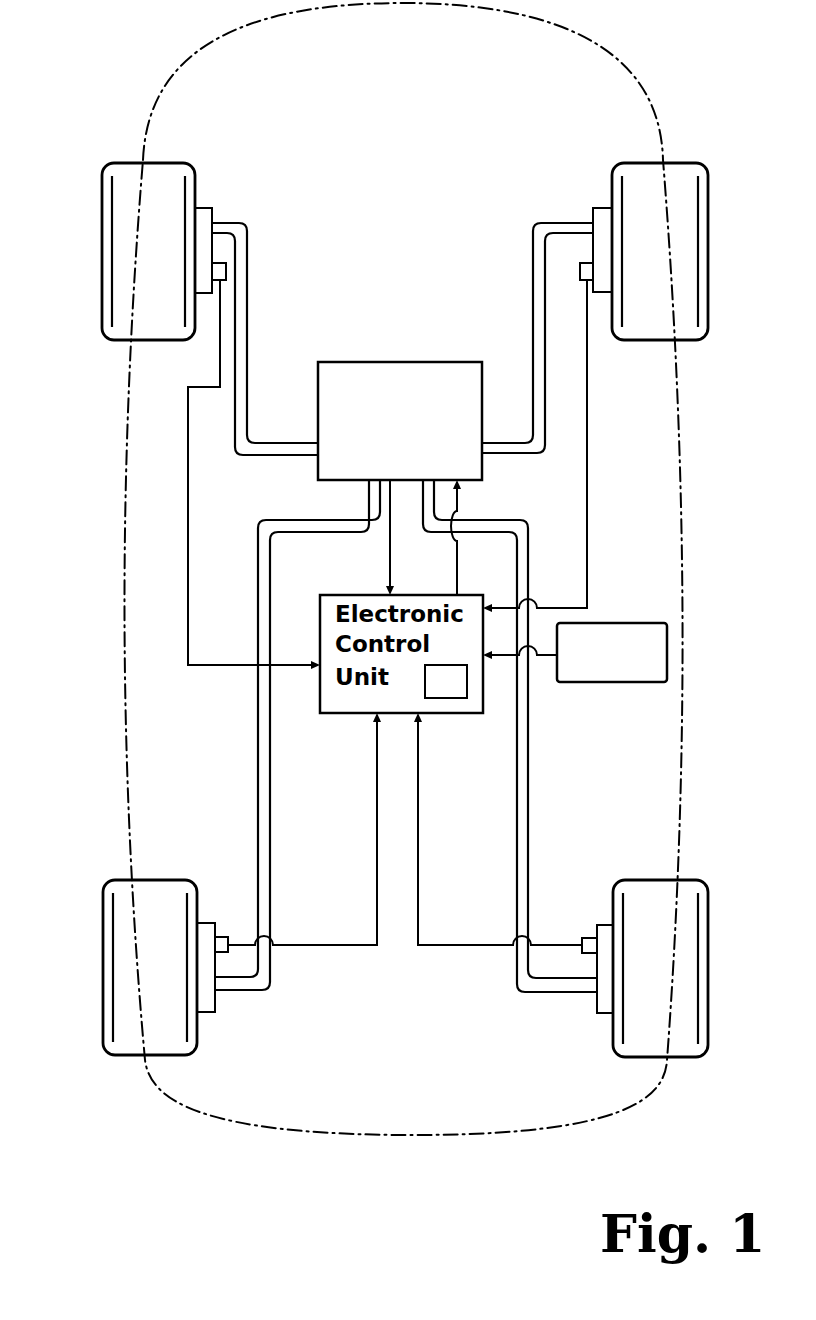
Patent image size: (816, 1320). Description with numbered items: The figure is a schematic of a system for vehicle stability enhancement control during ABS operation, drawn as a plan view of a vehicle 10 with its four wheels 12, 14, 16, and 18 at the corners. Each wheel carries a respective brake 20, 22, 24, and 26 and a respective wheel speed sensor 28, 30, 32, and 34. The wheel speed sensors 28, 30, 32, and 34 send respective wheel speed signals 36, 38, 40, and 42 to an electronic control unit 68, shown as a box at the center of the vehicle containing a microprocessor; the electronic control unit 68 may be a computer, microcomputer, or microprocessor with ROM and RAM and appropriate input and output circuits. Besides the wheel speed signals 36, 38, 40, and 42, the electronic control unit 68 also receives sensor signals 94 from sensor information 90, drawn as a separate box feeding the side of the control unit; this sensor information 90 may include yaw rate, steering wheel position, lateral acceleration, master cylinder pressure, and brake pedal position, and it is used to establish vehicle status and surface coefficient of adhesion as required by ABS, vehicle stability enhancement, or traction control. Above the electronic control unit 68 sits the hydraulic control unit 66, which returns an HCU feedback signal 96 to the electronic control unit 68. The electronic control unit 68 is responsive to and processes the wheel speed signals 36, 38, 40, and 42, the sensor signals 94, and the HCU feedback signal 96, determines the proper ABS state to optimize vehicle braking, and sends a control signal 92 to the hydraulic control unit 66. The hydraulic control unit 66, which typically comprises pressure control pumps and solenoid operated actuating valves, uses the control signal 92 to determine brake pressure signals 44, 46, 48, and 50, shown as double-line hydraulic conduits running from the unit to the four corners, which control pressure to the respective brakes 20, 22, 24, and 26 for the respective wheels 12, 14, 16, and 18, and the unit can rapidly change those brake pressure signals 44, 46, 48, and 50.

The vehicle 10 is at (612, 50).
The wheel 12 is at (124, 175).
The wheel 14 is at (682, 175).
The wheel 16 is at (125, 1048).
The wheel 18 is at (690, 900).
The brake 20 is at (207, 213).
The brake 22 is at (600, 213).
The brake 24 is at (208, 1010).
The brake 26 is at (603, 1005).
The wheel speed sensor 28 is at (227, 272).
The wheel speed sensor 30 is at (580, 272).
The wheel speed sensor 32 is at (225, 938).
The wheel speed sensor 34 is at (585, 938).
The wheel speed signal 36 is at (188, 428).
The wheel speed signal 38 is at (589, 406).
The wheel speed signal 40 is at (318, 950).
The wheel speed signal 42 is at (460, 950).
The brake pressure signal 44 is at (236, 225).
The brake pressure signal 46 is at (540, 335).
The brake pressure signal 48 is at (272, 882).
The brake pressure signal 50 is at (517, 886).
The hydraulic control unit 66 is at (453, 368).
The electronic control unit 68 is at (468, 712).
The sensor information 90 is at (633, 622).
The control signal 92 is at (462, 506).
The sensor signals 94 is at (538, 661).
The HCU feedback signal 96 is at (390, 560).